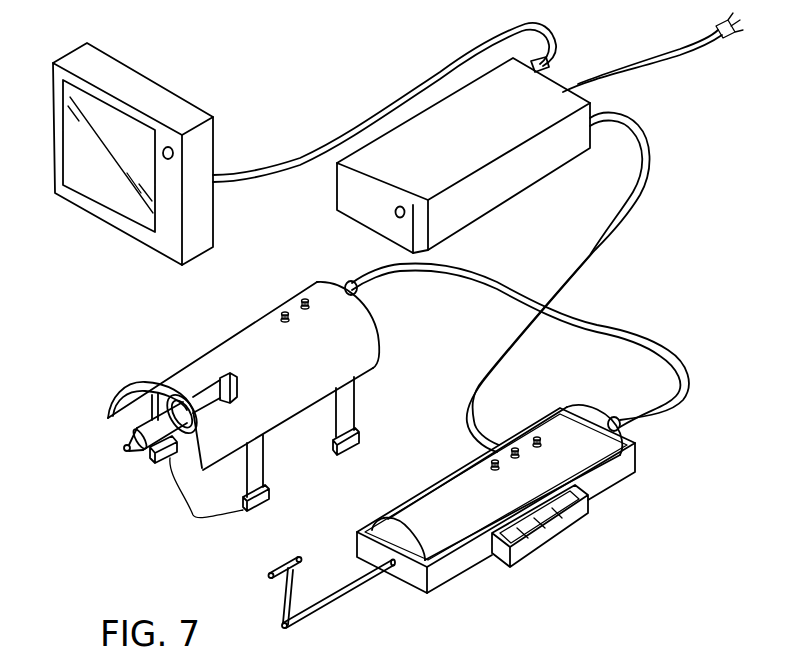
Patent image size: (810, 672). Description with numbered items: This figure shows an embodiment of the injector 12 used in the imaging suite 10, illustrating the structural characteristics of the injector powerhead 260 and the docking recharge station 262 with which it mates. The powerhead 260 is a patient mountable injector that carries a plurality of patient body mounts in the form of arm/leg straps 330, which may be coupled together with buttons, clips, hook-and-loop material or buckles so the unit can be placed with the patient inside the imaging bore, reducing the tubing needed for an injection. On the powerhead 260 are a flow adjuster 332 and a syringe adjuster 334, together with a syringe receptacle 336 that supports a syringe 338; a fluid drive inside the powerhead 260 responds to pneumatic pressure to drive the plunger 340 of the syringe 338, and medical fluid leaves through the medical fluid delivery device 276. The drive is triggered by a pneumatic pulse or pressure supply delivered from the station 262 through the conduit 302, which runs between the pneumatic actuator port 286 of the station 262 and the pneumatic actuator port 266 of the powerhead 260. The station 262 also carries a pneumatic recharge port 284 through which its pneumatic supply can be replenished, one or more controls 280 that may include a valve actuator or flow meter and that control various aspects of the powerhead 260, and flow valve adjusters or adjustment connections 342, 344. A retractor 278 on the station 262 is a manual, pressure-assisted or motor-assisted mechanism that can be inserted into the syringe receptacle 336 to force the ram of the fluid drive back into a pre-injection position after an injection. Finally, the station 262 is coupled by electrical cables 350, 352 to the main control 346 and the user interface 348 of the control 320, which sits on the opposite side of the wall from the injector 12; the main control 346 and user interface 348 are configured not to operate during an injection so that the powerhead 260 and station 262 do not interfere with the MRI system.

The imaging suite 10 is at (697, 291).
The injector 12 is at (118, 544).
The injector powerhead 260 is at (78, 459).
The docking recharge station 262 is at (480, 633).
The pneumatic actuator port 266 is at (360, 296).
The medical fluid delivery device 276 is at (113, 458).
The retractor 278 is at (330, 604).
The controls 280 is at (580, 539).
The pneumatic recharge port 284 is at (480, 453).
The pneumatic actuator port 286 is at (615, 418).
The conduit 302 is at (512, 278).
The control 320 is at (324, 93).
The arm/leg straps 330 is at (383, 470).
The flow adjuster 332 is at (305, 294).
The syringe adjuster 334 is at (282, 308).
The syringe receptacle 336 is at (200, 402).
The syringe 338 is at (137, 432).
The plunger 340 is at (192, 405).
The flow valve adjuster 342 is at (513, 447).
The flow valve adjuster 344 is at (532, 436).
The main control 346 is at (405, 120).
The user interface 348 is at (159, 85).
The electrical cable 350 is at (643, 200).
The electrical cable 352 is at (415, 75).